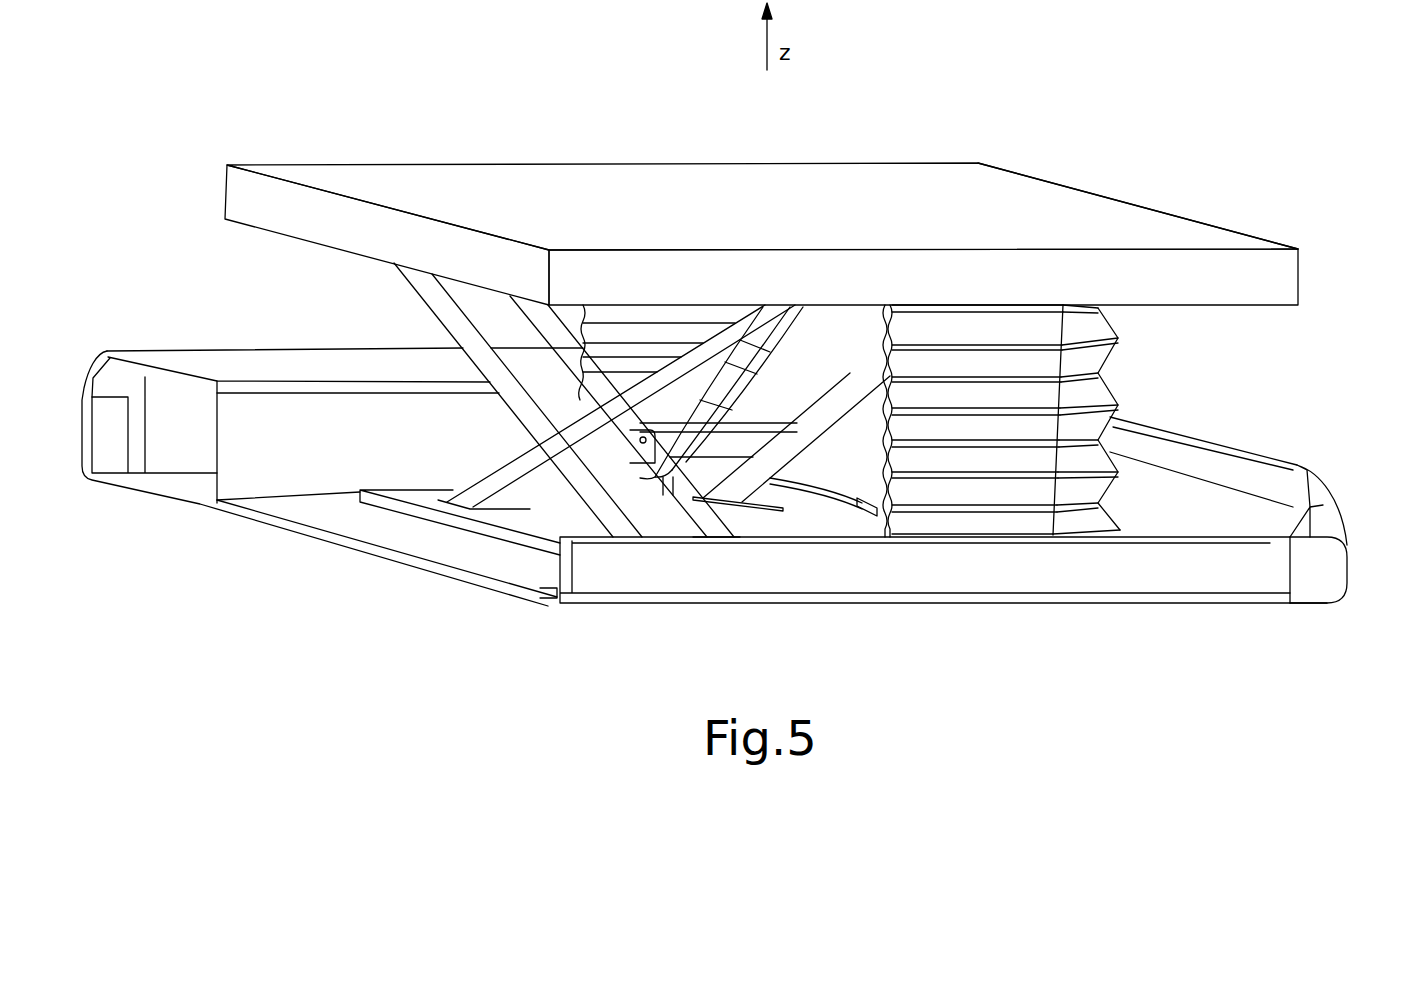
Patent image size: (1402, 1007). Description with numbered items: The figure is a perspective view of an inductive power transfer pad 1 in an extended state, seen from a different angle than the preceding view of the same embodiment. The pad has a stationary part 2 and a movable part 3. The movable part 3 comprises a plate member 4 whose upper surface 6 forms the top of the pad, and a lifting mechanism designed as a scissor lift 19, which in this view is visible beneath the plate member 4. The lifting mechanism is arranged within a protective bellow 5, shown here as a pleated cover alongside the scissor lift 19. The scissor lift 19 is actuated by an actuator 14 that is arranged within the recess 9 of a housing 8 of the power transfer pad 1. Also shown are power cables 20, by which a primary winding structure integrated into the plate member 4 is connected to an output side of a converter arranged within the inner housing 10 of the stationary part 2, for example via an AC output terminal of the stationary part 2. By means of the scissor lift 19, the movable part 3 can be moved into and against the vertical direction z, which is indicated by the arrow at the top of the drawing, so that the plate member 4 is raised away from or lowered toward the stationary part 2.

The power transfer pad 1 is at (968, 604).
The stationary part 2 is at (158, 357).
The movable part 3 is at (1083, 192).
The plate member 4 is at (938, 183).
The protective bellow 5 is at (1093, 390).
The upper surface 6 is at (628, 197).
The housing 8 is at (1343, 518).
The recess 9 is at (457, 542).
The inner housing 10 is at (212, 365).
The actuator 14 is at (707, 537).
The scissor lift 19 is at (578, 475).
The power cables 20 is at (800, 312).